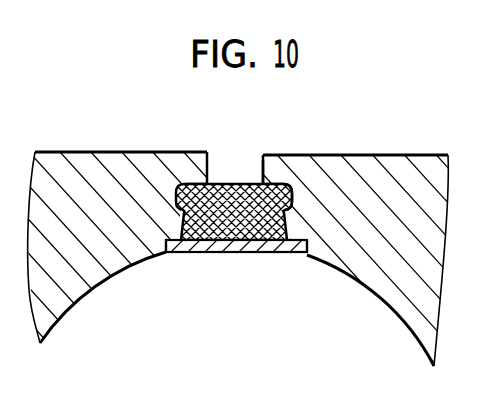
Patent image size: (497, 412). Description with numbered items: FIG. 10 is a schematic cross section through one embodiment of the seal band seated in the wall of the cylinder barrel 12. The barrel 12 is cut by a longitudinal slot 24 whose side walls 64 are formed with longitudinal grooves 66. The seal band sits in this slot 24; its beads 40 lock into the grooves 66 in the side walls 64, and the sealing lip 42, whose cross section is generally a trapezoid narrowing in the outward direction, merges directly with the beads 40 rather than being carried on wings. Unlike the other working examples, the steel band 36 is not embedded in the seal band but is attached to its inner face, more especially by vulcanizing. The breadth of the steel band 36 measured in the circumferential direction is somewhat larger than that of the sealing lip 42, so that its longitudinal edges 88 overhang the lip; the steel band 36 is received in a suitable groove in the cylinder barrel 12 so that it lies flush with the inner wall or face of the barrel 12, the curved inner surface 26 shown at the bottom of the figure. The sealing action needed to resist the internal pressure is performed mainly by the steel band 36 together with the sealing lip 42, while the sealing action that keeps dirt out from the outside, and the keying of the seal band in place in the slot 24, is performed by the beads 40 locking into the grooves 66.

The cylinder barrel 12 is at (430, 245).
The longitudinal slot 24 is at (217, 168).
The bore surface 26 is at (197, 255).
The steel band 36 is at (225, 252).
The bead 40 is at (178, 185).
The sealing lip 42 is at (257, 252).
The side wall 64 is at (261, 170).
The longitudinal groove 66 is at (294, 189).
The longitudinal edge 88 is at (172, 252).